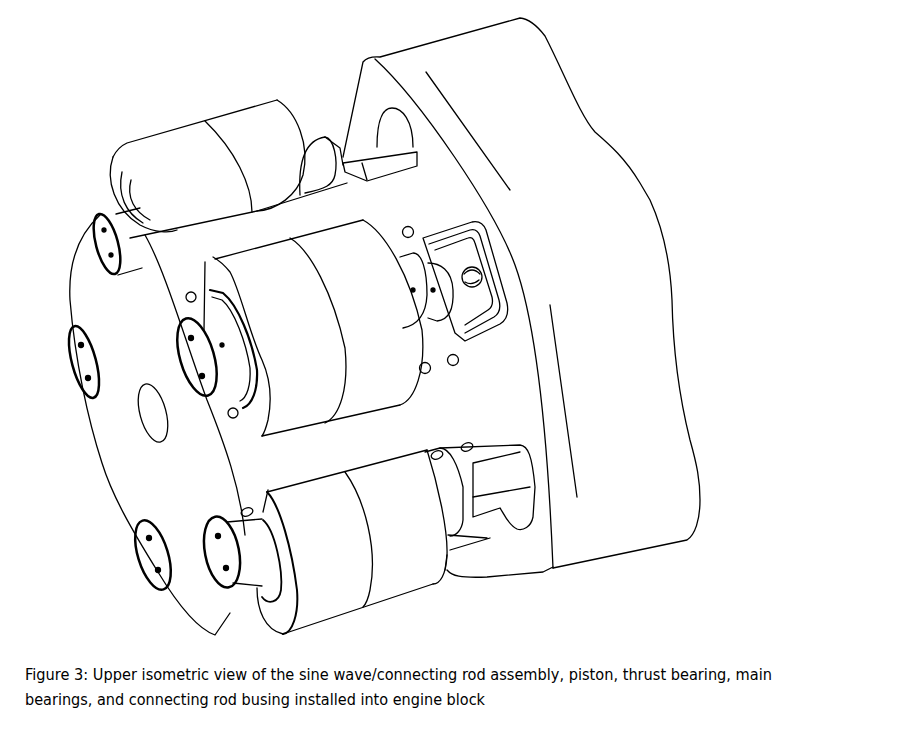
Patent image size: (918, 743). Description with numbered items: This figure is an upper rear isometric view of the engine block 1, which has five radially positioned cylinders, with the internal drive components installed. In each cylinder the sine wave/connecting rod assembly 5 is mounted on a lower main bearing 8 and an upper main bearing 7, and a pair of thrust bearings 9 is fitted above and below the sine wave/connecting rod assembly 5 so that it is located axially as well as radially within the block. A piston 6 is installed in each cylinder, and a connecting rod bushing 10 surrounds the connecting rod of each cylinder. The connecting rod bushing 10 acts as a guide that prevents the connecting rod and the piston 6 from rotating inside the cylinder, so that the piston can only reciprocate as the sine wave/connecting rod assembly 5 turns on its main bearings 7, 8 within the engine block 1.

The engine block 1 is at (652, 192).
The sine wave/connecting rod assembly 5 is at (393, 403).
The piston 6 is at (513, 307).
The upper main bearing 7 is at (432, 343).
The lower main bearing 8 is at (245, 398).
The thrust bearing 9 is at (217, 393).
The connecting rod bushing 10 is at (450, 322).